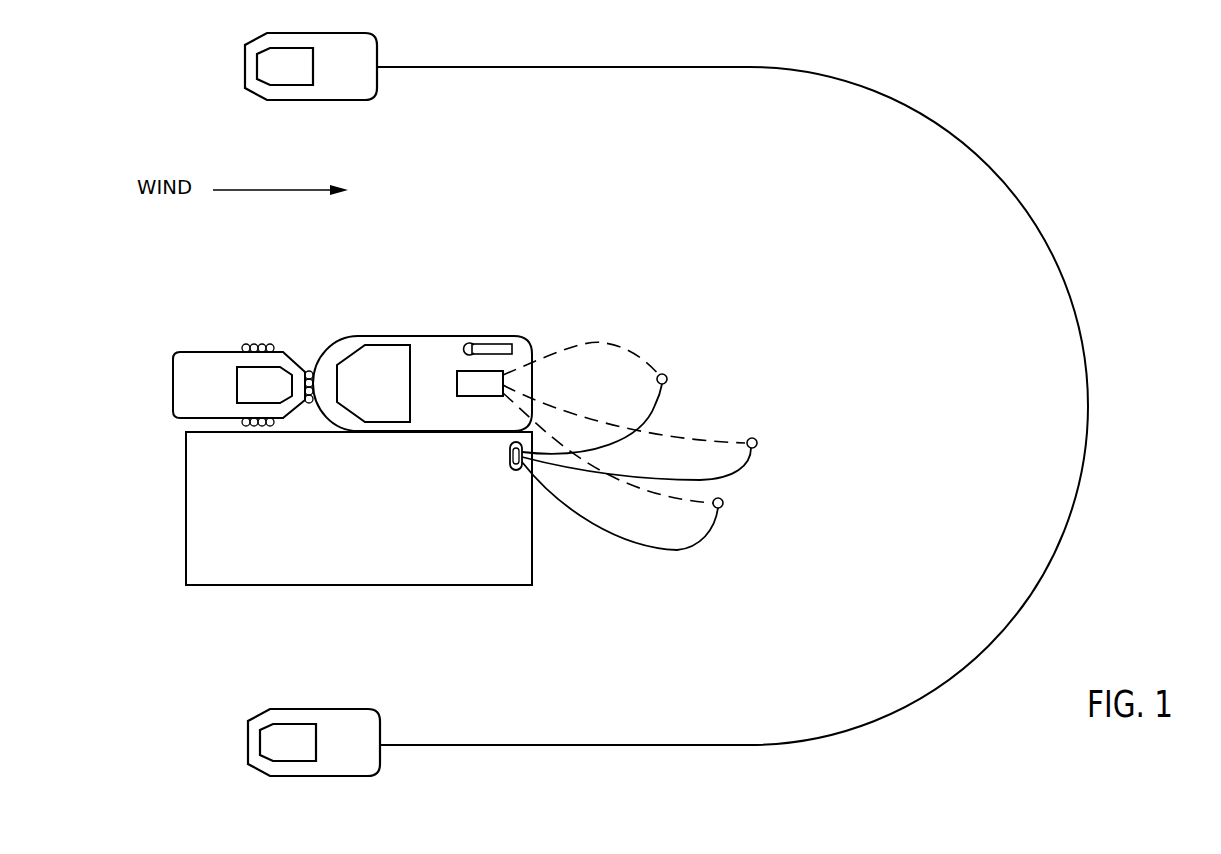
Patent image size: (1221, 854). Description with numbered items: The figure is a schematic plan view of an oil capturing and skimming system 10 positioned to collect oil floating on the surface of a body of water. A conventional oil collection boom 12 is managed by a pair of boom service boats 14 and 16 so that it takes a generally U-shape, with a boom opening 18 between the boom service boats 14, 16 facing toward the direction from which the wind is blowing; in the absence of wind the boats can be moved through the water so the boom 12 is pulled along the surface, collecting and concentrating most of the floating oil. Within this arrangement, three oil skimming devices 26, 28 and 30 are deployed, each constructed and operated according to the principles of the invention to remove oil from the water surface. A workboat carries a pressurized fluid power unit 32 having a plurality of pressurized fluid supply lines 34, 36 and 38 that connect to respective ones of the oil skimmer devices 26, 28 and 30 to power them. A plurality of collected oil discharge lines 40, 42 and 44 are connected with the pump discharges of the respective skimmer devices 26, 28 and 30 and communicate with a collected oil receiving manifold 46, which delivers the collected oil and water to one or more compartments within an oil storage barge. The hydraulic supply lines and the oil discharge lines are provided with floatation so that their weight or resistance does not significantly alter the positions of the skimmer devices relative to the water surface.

The oil capturing and skimming system 10 is at (994, 80).
The oil collection boom 12 is at (1028, 213).
The boom service boat 14 is at (245, 67).
The boom service boat 16 is at (248, 745).
The boom opening 18 is at (641, 160).
The oil skimming device 26 is at (666, 375).
The oil skimming device 28 is at (756, 440).
The oil skimming device 30 is at (343, 512).
The pressurized fluid power unit 32 is at (458, 370).
The pressurized fluid supply line 34 is at (599, 343).
The pressurized fluid supply line 36 is at (713, 441).
The pressurized fluid supply line 38 is at (680, 500).
The collected oil discharge line 40 is at (653, 405).
The collected oil discharge line 42 is at (650, 477).
The collected oil discharge line 44 is at (670, 551).
The collected oil receiving manifold 46 is at (510, 454).